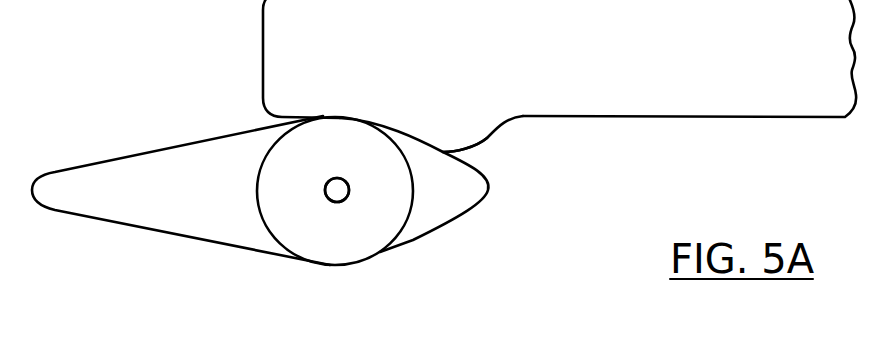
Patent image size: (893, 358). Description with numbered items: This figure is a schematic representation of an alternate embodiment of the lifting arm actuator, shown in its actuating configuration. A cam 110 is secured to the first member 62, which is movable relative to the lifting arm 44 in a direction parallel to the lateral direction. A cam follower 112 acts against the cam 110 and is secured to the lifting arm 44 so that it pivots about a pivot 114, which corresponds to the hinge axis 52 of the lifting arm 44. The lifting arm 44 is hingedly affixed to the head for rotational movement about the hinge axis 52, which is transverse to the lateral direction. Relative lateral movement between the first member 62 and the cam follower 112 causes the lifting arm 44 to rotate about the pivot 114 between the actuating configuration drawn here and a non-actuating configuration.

The first member 62 is at (396, 58).
The lifting arm 44 is at (140, 167).
The cam 110 is at (490, 137).
The cam follower 112 is at (413, 240).
The pivot 114 is at (340, 201).
The hinge axis 52 is at (337, 190).